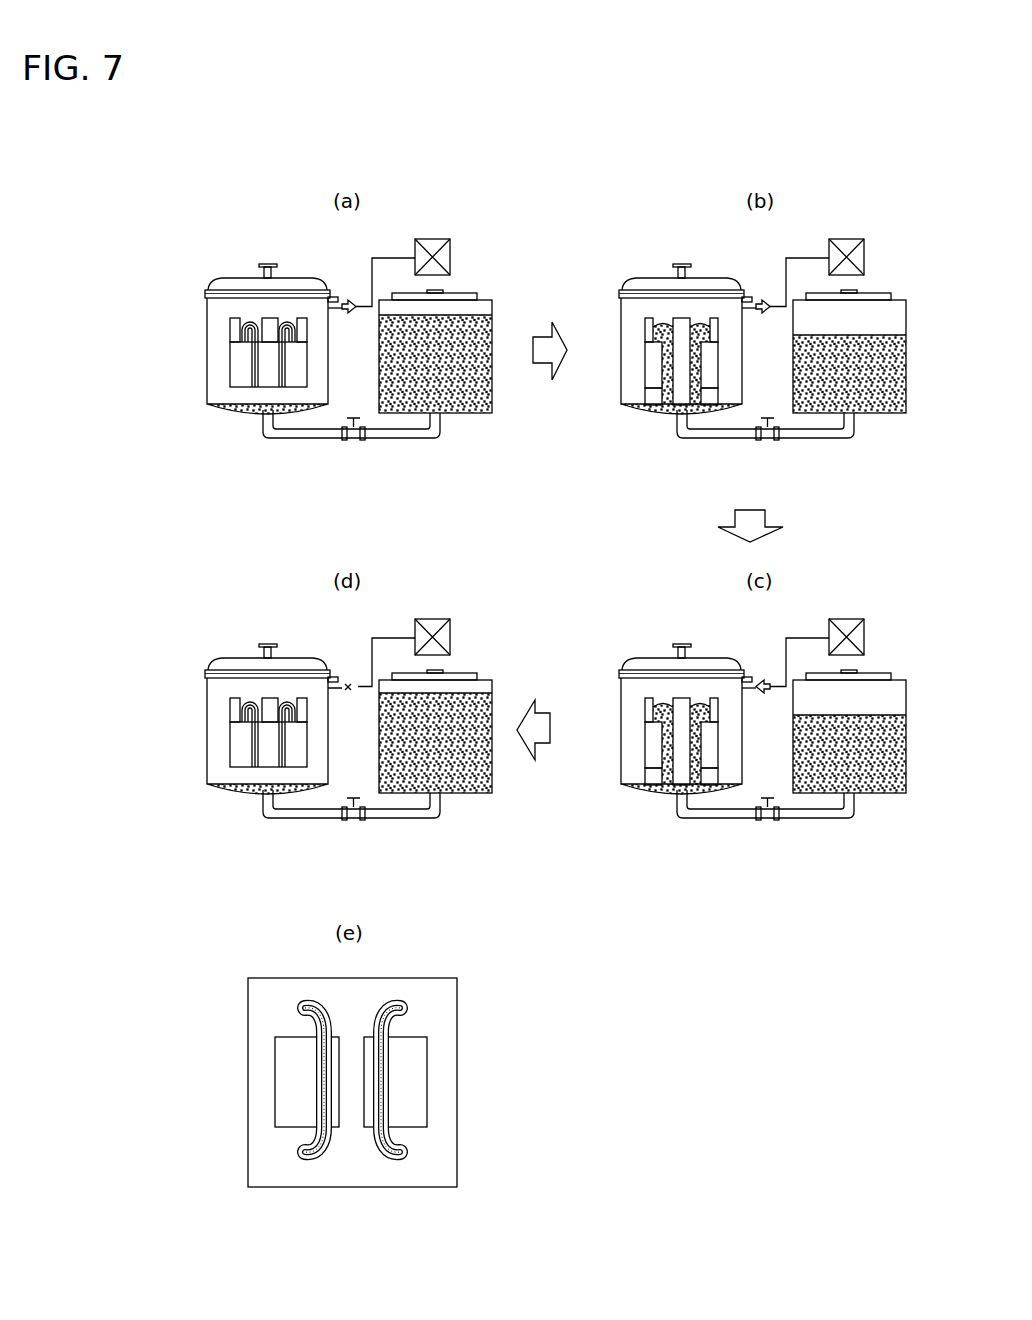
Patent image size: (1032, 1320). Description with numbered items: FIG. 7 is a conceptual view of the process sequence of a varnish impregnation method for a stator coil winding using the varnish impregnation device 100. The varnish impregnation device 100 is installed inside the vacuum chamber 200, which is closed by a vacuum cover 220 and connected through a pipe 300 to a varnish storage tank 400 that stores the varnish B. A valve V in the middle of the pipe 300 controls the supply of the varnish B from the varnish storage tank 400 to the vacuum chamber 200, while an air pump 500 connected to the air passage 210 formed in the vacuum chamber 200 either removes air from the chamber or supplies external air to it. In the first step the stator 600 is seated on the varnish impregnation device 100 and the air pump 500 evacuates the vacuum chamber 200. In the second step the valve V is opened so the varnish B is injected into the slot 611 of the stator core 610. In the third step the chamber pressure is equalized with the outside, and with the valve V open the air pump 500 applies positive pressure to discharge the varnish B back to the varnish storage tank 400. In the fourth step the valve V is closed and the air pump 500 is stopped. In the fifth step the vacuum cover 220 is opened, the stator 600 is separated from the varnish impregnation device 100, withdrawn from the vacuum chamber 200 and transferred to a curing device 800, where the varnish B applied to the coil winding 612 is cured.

The varnish impregnation device 100 is at (464, 581).
The vacuum chamber 200 is at (447, 546).
The air passage 210 is at (563, 467).
The vacuum cover 220 is at (474, 459).
The pipe 300 is at (558, 647).
The valve V is at (557, 651).
The varnish storage tank 400 is at (654, 575).
The varnish B is at (668, 367).
The air pump 500 is at (631, 414).
The stator 600 is at (443, 1060).
The stator core 610 is at (427, 1093).
The slot 611 is at (389, 1088).
The coil winding 612 is at (410, 1007).
The curing device 800 is at (457, 1160).